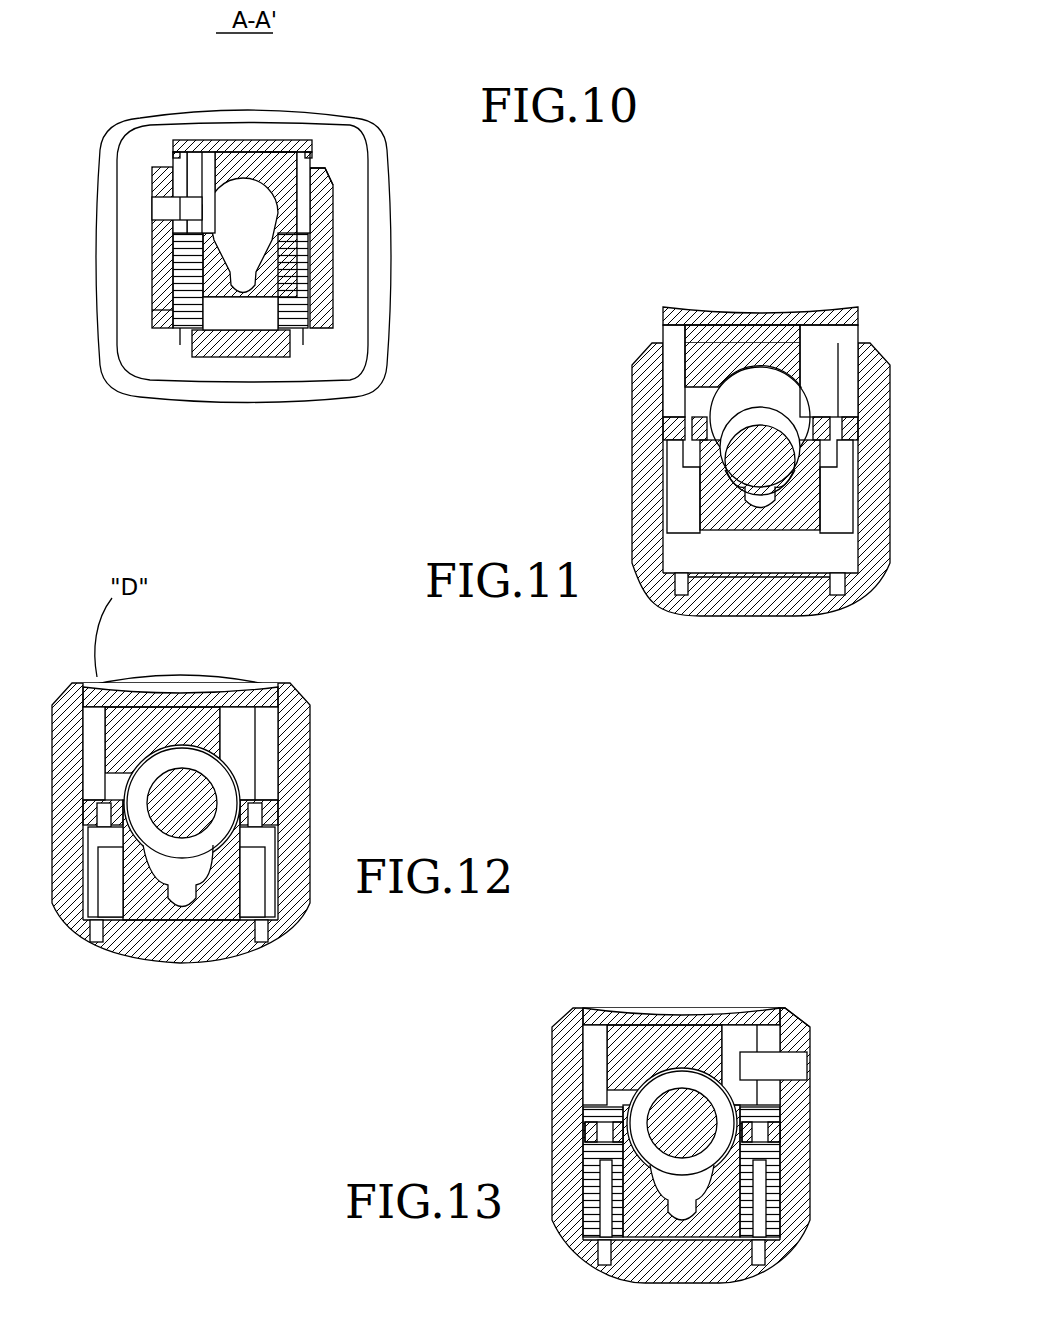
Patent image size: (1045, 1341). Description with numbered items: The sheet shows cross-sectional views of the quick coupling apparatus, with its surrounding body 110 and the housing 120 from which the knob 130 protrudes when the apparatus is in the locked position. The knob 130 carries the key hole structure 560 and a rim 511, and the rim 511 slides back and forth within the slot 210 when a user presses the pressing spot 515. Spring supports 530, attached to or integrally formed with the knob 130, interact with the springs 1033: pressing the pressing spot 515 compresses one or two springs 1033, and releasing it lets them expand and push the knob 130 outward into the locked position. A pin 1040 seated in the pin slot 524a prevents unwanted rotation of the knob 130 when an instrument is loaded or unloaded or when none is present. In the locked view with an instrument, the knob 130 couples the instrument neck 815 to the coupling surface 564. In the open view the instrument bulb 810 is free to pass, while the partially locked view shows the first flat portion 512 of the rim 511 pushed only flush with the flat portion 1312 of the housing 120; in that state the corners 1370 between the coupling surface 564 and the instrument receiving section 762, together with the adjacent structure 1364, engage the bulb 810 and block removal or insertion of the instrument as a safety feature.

In FIG. 10, the outer housing body 110 is at (357, 322).
In FIG. 10, the housing 120 is at (333, 195).
In FIG. 11, the housing 120 is at (632, 515).
In FIG. 12, the housing 120 is at (307, 857).
In FIG. 13, the housing 120 is at (552, 1073).
In FIG. 10, the knob 130 is at (283, 152).
In FIG. 11, the knob 130 is at (707, 328).
In FIG. 10, the slot 210 is at (178, 173).
In FIG. 10, the rim 511 is at (183, 148).
In FIG. 12, the rim 511 is at (273, 687).
In FIG. 13, the first flat portion 512 is at (592, 1008).
In FIG. 10, the pressing spot 515 is at (257, 140).
In FIG. 12, the pressing spot 515 is at (177, 697).
In FIG. 10, the pin slot 524a is at (197, 170).
In FIG. 10, the spring supports 530 is at (157, 227).
In FIG. 10, the key hole structure 560 is at (322, 178).
In FIG. 11, the coupling surface 564 is at (713, 532).
In FIG. 13, the instrument receiving section 762 is at (807, 1080).
In FIG. 11, the bulb 810 is at (785, 427).
In FIG. 12, the bulb 810 is at (220, 783).
In FIG. 13, the bulb 810 is at (692, 1090).
In FIG. 11, the instrument neck 815 is at (780, 493).
In FIG. 12, the instrument neck 815 is at (200, 817).
In FIG. 13, the instrument neck 815 is at (648, 1095).
In FIG. 10, the springs 1033 is at (165, 308).
In FIG. 10, the pin 1040 is at (163, 202).
In FIG. 13, the flat portion 1312 is at (780, 1008).
In FIG. 13, the nut 1364 is at (717, 1190).
In FIG. 13, the corners 1370 is at (748, 1165).